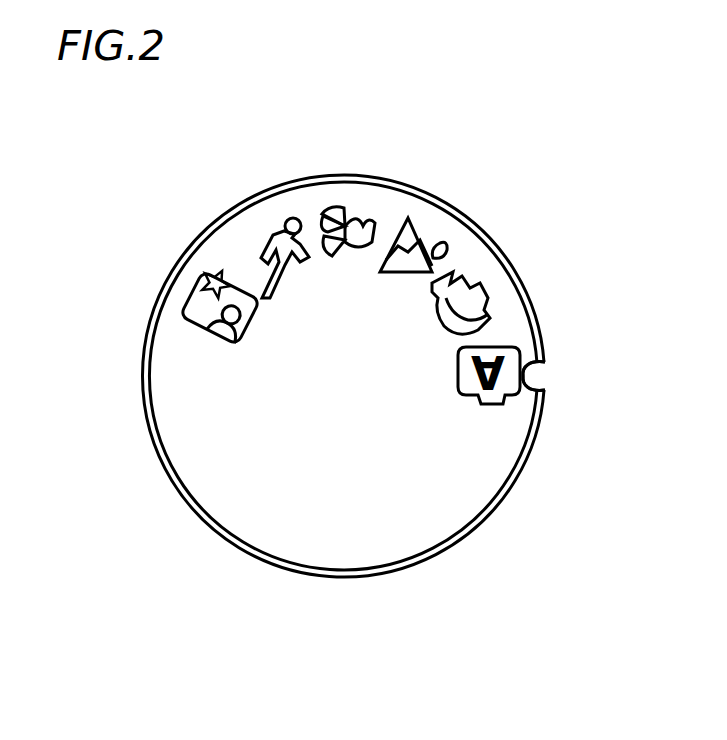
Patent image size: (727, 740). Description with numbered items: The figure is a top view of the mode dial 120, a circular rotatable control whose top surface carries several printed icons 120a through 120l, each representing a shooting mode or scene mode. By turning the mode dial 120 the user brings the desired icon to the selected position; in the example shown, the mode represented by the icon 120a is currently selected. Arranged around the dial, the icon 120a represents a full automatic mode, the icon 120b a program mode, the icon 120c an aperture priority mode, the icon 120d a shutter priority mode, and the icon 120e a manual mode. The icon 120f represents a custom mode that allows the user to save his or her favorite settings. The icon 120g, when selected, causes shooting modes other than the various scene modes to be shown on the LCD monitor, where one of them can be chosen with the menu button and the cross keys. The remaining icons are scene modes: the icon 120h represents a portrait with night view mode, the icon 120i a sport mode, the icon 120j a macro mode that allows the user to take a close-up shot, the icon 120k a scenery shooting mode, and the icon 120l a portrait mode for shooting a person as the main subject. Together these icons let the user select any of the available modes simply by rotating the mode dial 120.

The mode dial 120 is at (421, 108).
The icon 120a is at (528, 376).
The icon 120b is at (478, 463).
The icon 120c is at (430, 508).
The icon 120d is at (338, 538).
The icon 120e is at (270, 528).
The icon 120f is at (207, 472).
The icon 120g is at (180, 377).
The icon 120h is at (193, 287).
The icon 120i is at (268, 222).
The icon 120j is at (343, 207).
The icon 120k is at (430, 240).
The icon 120l is at (480, 282).